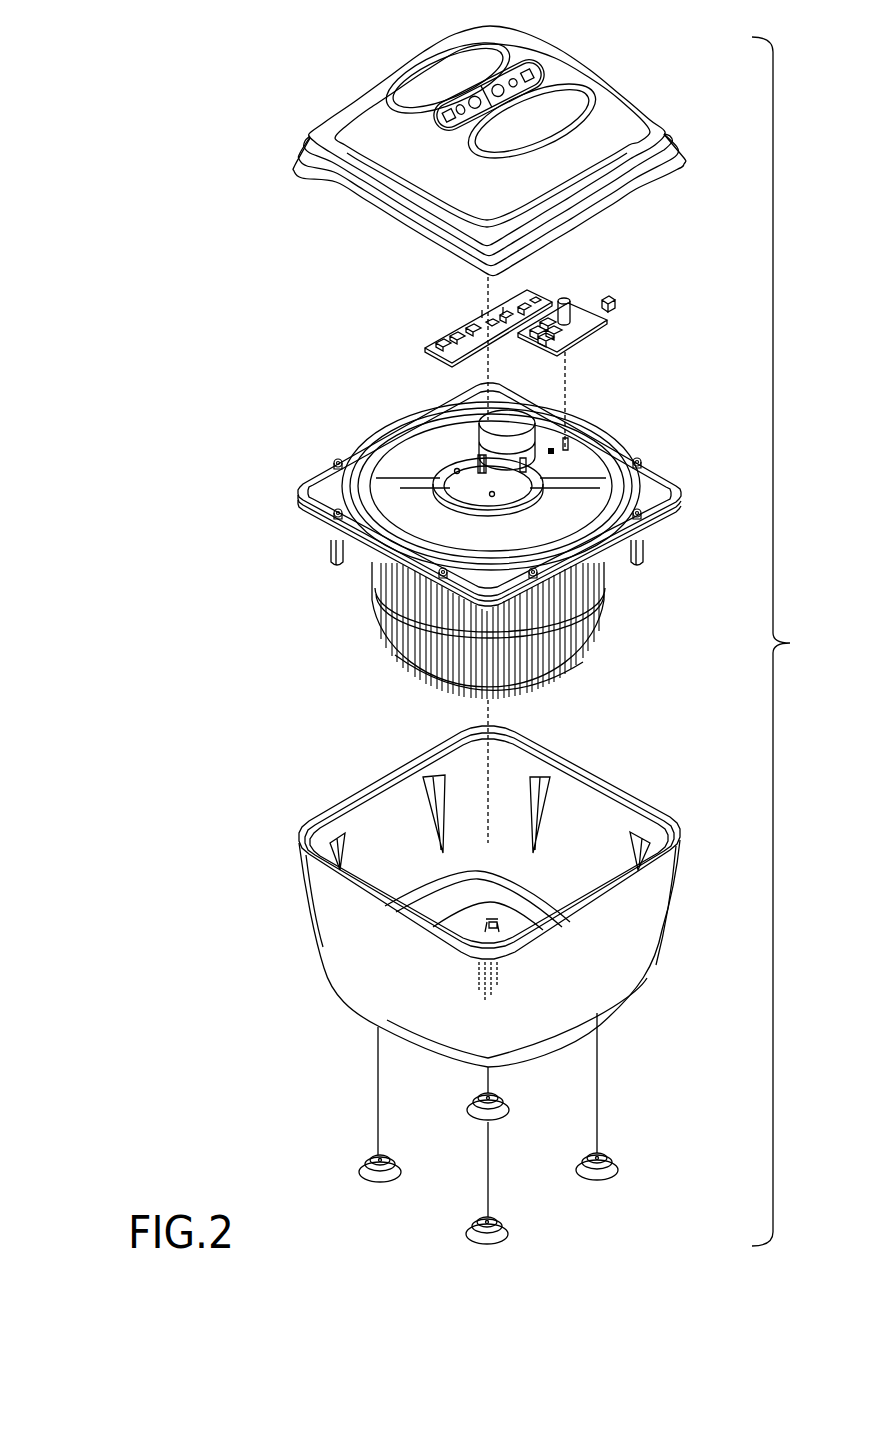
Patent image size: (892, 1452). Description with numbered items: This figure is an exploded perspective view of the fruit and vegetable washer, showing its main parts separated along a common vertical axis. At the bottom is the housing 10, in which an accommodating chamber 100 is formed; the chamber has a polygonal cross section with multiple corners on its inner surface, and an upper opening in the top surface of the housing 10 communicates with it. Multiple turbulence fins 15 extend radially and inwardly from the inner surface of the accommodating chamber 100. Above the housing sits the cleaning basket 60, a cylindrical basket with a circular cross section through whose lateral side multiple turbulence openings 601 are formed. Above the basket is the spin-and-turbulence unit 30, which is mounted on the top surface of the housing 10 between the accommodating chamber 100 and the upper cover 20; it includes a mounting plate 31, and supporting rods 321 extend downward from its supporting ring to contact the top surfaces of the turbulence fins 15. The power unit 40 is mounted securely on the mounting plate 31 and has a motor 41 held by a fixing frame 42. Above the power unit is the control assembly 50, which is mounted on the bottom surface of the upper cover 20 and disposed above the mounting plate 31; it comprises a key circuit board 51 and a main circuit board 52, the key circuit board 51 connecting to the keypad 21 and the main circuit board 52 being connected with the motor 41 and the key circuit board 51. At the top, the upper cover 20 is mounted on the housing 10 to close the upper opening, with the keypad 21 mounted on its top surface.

The housing 10 is at (655, 993).
The turbulence fins 15 is at (432, 793).
The accommodating chamber 100 is at (608, 841).
The upper cover 20 is at (654, 101).
The keypad 21 is at (539, 60).
The spin-and-turbulence unit 30 is at (644, 440).
The mounting plate 31 is at (326, 478).
The supporting rods 321 is at (650, 550).
The power unit 40 is at (542, 441).
The motor 41 is at (487, 419).
The fixing frame 42 is at (456, 468).
The control assembly 50 is at (568, 290).
The key circuit board 51 is at (443, 321).
The main circuit board 52 is at (609, 301).
The cleaning basket 60 is at (619, 638).
The turbulence openings 601 is at (388, 594).